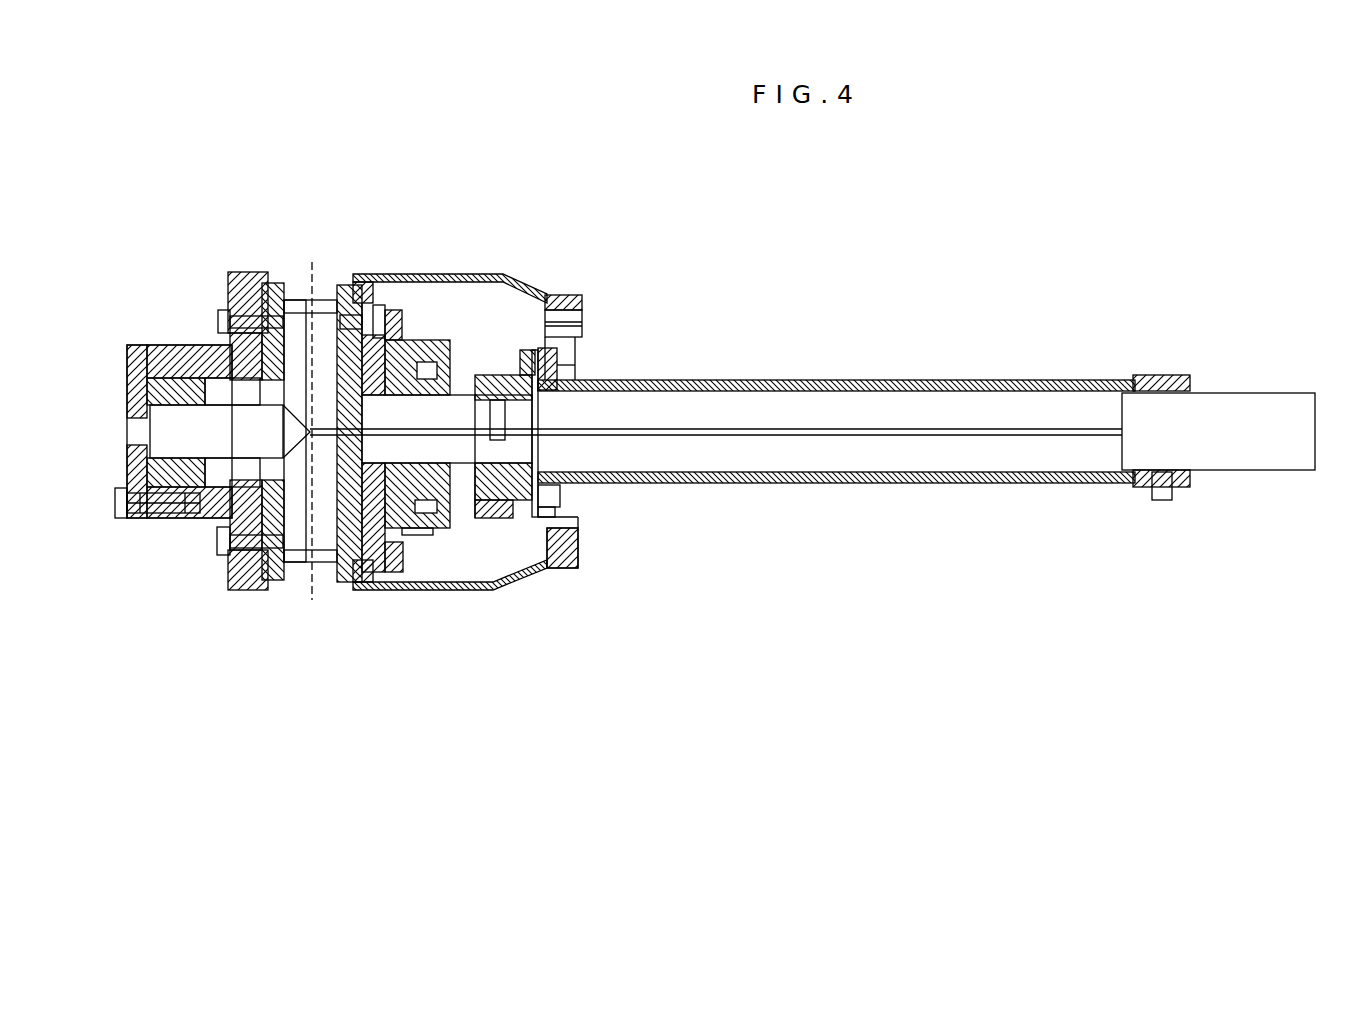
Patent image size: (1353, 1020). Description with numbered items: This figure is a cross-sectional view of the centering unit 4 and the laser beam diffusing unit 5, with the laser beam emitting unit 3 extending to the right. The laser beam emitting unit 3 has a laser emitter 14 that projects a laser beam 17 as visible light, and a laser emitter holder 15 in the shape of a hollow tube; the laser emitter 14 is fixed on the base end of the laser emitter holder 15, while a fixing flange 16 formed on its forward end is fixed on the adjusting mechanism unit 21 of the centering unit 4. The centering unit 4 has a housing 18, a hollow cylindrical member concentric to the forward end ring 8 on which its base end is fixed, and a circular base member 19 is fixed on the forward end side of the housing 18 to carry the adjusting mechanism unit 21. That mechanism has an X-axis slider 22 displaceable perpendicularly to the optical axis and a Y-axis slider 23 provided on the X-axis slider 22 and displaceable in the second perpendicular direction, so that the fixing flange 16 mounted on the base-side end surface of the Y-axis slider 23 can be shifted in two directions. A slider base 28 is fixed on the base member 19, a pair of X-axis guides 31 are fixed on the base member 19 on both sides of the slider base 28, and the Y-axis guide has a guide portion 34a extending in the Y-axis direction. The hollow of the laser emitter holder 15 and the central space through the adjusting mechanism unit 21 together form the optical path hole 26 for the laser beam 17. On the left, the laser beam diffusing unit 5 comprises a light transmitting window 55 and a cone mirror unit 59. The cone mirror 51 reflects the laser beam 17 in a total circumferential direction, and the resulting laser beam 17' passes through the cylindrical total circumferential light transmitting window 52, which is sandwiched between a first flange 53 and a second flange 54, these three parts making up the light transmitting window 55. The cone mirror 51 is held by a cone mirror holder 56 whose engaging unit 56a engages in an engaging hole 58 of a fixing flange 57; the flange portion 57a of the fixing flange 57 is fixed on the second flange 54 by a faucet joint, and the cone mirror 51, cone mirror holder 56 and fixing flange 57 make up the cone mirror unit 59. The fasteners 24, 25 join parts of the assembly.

The laser beam emitting unit 3 is at (825, 378).
The centering unit 4 is at (490, 262).
The laser beam diffusing unit 5 is at (190, 262).
The forward end ring 8 is at (578, 548).
The laser emitter 14 is at (1247, 470).
The laser emitter holder 15 is at (825, 483).
The fixing flange 16 is at (577, 353).
The laser beam 17 is at (716, 377).
The reflected laser beam 17' is at (231, 381).
The housing 18 is at (525, 580).
The base member 19 is at (328, 590).
The adjusting mechanism unit 21 is at (445, 340).
The X-axis slider 22 is at (468, 560).
The Y-axis slider 23 is at (500, 372).
The bolt 24 is at (577, 493).
The nut 25 is at (643, 534).
The optical path hole 26 is at (393, 420).
The slider base 28 is at (420, 310).
The X-axis guide 31 is at (428, 560).
The guide portion 34a is at (545, 410).
The cone mirror 51 is at (233, 592).
The total circumferential light transmitting window 52 is at (278, 593).
The first flange 53 is at (295, 593).
The second flange 54 is at (277, 593).
The light transmitting window 55 is at (305, 655).
The cone mirror holder 56 is at (128, 343).
The engaging unit 56a is at (198, 523).
The fixing flange 57 is at (205, 345).
The flange portion 57a is at (235, 272).
The engaging hole 58 is at (215, 390).
The cone mirror unit 59 is at (130, 523).